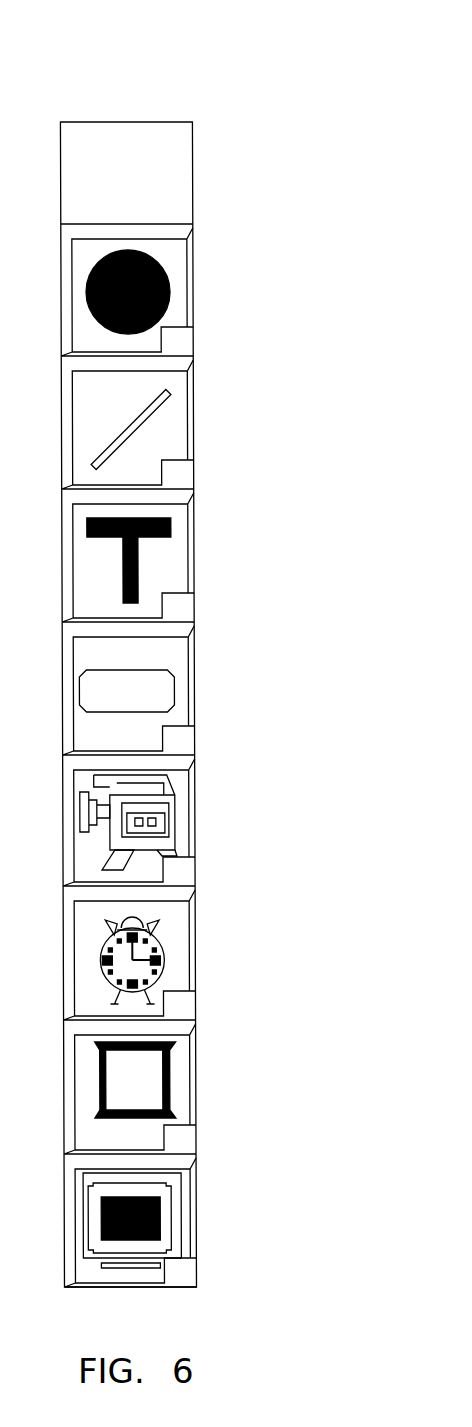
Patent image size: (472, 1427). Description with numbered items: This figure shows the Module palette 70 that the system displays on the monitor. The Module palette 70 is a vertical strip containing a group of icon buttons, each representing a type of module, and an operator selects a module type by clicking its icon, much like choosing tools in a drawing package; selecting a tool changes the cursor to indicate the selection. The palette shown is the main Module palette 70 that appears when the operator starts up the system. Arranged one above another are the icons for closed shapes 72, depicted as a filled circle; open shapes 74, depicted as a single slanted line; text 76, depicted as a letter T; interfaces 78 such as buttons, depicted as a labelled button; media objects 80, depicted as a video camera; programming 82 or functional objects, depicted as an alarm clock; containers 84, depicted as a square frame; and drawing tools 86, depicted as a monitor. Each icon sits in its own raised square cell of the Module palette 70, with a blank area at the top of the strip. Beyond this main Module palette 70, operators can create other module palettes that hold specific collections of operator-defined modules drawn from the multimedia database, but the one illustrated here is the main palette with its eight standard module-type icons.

The Module palette 70 is at (108, 113).
The closed shapes icon 72 is at (193, 312).
The open shapes icon 74 is at (193, 435).
The text icon 76 is at (193, 573).
The interfaces icon 78 is at (193, 690).
The media objects icon 80 is at (193, 833).
The programming icon 82 is at (193, 965).
The containers icon 84 is at (193, 1102).
The drawing tools icon 86 is at (196, 1218).